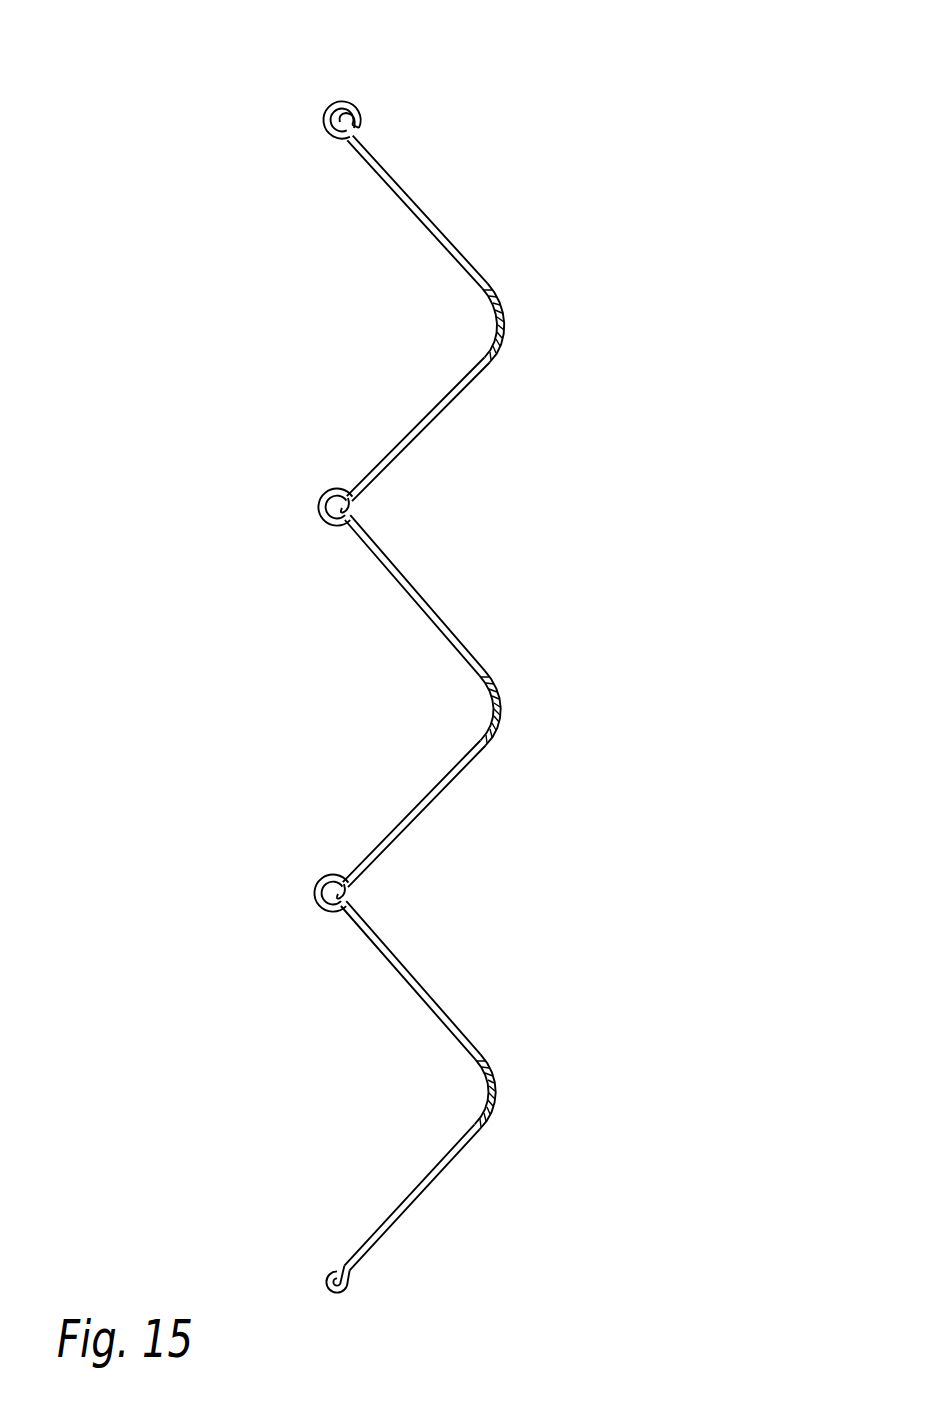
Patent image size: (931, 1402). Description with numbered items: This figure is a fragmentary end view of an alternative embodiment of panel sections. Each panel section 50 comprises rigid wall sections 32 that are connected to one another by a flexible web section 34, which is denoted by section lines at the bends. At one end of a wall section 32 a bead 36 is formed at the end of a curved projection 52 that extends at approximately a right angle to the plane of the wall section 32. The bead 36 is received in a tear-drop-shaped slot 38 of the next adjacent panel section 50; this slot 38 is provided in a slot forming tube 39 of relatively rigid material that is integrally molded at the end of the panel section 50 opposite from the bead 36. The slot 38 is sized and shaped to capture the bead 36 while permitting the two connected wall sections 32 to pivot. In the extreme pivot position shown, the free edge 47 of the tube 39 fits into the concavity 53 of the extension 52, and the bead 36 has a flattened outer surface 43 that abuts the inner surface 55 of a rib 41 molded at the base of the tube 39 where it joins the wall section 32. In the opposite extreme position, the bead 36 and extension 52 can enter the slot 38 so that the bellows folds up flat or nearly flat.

The panel section 50 is at (407, 683).
The rigid wall section 32 is at (468, 262).
The flexible web section 34 is at (506, 312).
The tear-drop-shaped slot 38 is at (327, 105).
The slot forming tube 39 is at (352, 100).
The rib 41 is at (356, 137).
The inner surface 55 is at (360, 131).
The free edge 47 is at (343, 128).
The bead 36 is at (330, 527).
The curved projection 52 is at (360, 512).
The concavity 53 is at (337, 1270).
The flattened outer surface 43 is at (343, 1290).